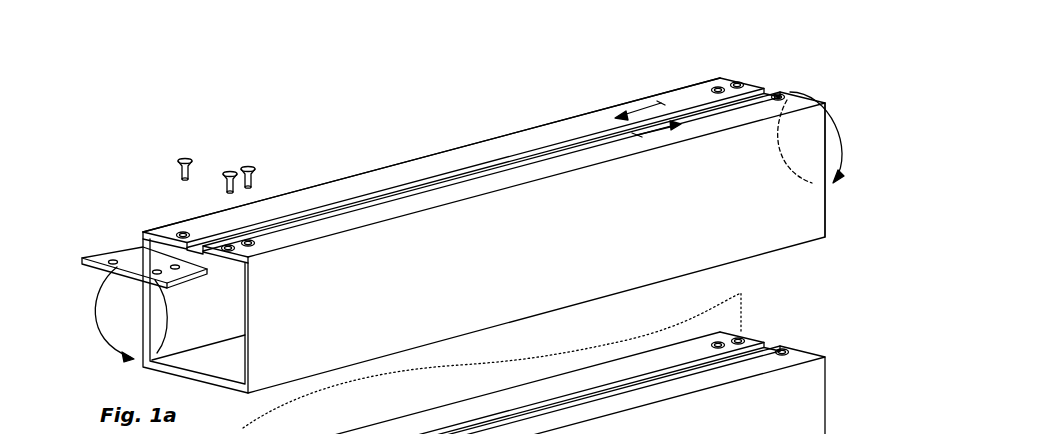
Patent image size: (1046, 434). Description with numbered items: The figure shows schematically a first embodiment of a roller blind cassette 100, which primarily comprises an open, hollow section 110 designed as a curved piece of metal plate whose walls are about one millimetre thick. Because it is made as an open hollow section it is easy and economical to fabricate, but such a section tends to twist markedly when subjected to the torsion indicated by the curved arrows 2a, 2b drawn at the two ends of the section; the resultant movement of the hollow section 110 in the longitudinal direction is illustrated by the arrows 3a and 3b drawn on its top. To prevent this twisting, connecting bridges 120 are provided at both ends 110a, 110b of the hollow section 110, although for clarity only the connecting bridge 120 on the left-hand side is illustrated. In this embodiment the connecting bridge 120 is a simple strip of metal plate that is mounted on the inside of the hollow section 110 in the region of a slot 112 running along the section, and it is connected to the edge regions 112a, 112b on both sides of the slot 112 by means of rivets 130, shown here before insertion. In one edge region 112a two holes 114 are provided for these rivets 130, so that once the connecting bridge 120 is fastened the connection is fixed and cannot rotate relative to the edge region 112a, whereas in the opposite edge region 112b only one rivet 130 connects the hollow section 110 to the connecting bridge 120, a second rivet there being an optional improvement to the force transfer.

The roller blind cassette 100 is at (453, 222).
The hollow section 110 is at (484, 222).
The end of the hollow section 110a is at (247, 292).
The end of the hollow section 110b is at (823, 190).
The slot 112 is at (483, 222).
The edge region 112a is at (520, 155).
The edge region 112b is at (502, 152).
The mounting holes / end plate 114 is at (282, 251).
The connecting bridge 120 is at (132, 253).
The rivets 130 is at (232, 170).
The arrow indicating torsion 2a is at (94, 329).
The arrow indicating torsion 2b is at (813, 90).
The arrow indicating longitudinal movement 3a is at (662, 102).
The arrow indicating longitudinal movement 3b is at (640, 133).